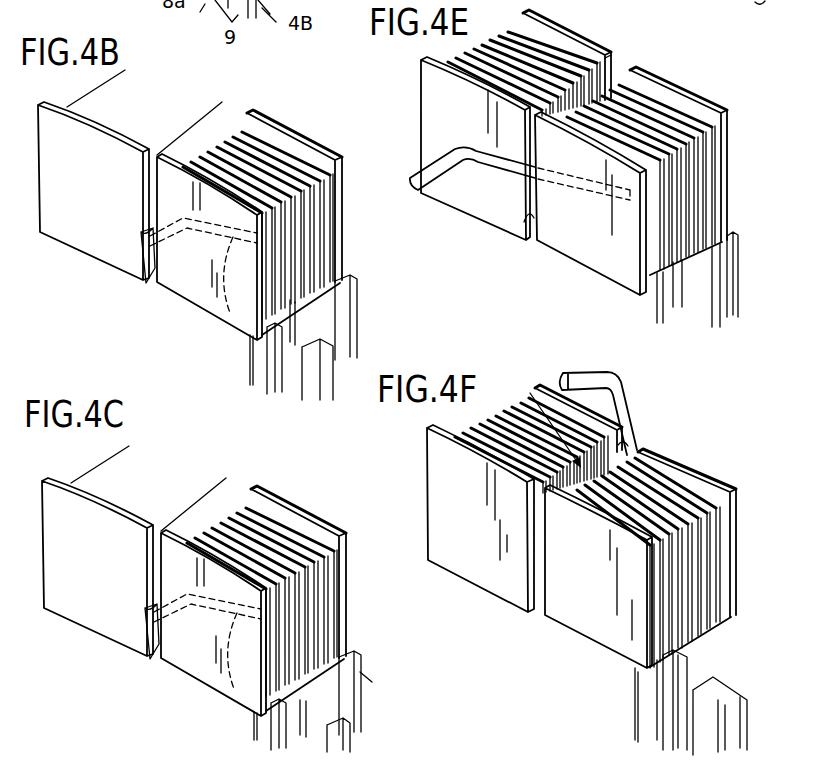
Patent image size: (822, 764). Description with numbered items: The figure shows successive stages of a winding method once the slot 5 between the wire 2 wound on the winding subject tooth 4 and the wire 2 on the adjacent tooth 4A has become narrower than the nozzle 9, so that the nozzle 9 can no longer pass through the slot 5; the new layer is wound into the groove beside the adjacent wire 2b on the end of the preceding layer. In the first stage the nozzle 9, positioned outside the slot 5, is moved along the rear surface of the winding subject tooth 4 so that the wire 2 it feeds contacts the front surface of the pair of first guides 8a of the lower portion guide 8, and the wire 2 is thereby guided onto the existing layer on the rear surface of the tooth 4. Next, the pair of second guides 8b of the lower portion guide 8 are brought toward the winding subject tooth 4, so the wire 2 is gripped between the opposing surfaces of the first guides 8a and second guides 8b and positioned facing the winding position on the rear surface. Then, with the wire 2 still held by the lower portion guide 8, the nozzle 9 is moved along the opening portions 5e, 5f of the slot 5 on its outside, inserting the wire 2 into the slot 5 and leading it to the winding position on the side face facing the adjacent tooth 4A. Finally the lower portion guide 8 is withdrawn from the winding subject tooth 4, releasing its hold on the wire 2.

In FIG. 4B, the wire 2 is at (320, 152).
In FIG. 4C, the wire 2 is at (231, 668).
In FIG. 4E, the wire 2 is at (477, 148).
In FIG. 4F, the wire 2 is at (633, 423).
In FIG. 4B, the adjacent wire 2b is at (266, 133).
In FIG. 4B, the winding subject tooth 4 is at (197, 292).
In FIG. 4C, the winding subject tooth 4 is at (200, 668).
In FIG. 4E, the winding subject tooth 4 is at (585, 232).
In FIG. 4F, the winding subject tooth 4 is at (592, 622).
In FIG. 4B, the adjacent tooth 4A is at (92, 233).
In FIG. 4C, the adjacent tooth 4A is at (96, 610).
In FIG. 4E, the adjacent tooth 4A is at (485, 205).
In FIG. 4F, the adjacent tooth 4A is at (480, 573).
In FIG. 4B, the slot 5 is at (200, 150).
In FIG. 4C, the slot 5 is at (204, 523).
In FIG. 4E, the slot 5 is at (590, 95).
In FIG. 4F, the slot 5 is at (530, 393).
In FIG. 4E, the opening portion 5e is at (518, 214).
In FIG. 4F, the opening portion 5f is at (625, 447).
In FIG. 4C, the lower portion guide 8 is at (366, 682).
In FIG. 4E, the lower portion guide 8 is at (729, 312).
In FIG. 4F, the lower portion guide 8 is at (707, 665).
In FIG. 4B, the first guide 8a is at (345, 305).
In FIG. 4C, the first guide 8a is at (303, 733).
In FIG. 4B, the second guide 8b is at (268, 365).
In FIG. 4C, the second guide 8b is at (268, 733).
In FIG. 4B, the nozzle 9 is at (150, 284).
In FIG. 4C, the nozzle 9 is at (155, 660).
In FIG. 4E, the nozzle 9 is at (428, 192).
In FIG. 4F, the nozzle 9 is at (573, 372).